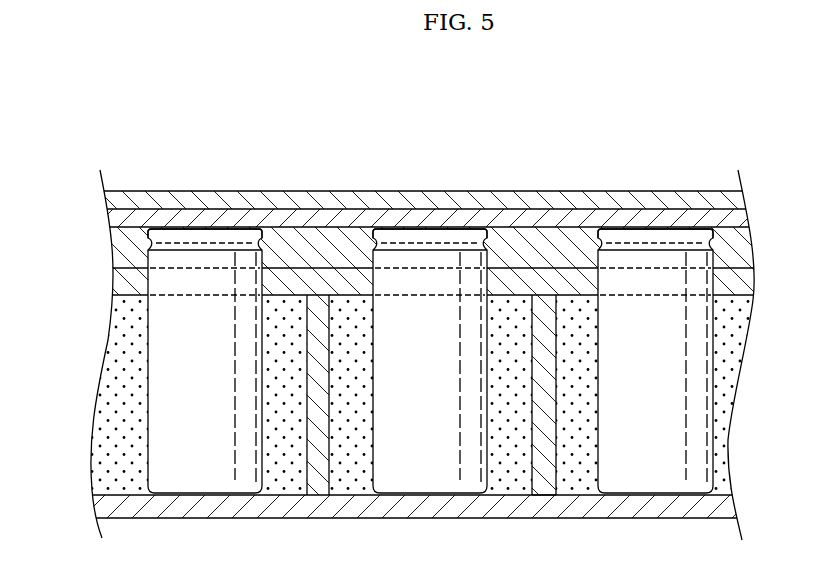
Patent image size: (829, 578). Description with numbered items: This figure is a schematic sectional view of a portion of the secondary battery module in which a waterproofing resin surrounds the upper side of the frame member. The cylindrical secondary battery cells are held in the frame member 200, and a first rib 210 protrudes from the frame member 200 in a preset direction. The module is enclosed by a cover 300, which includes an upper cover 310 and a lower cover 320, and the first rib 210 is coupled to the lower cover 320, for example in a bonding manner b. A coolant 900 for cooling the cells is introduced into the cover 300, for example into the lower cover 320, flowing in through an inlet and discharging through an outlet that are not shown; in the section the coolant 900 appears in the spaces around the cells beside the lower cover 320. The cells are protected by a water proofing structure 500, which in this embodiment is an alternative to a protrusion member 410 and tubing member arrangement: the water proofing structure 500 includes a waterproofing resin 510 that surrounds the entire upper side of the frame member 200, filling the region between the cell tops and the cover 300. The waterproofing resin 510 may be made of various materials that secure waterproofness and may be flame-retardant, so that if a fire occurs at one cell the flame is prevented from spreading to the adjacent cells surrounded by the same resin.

The frame member 200 is at (430, 320).
The first rib 210 is at (543, 335).
The cover 300 is at (430, 156).
The upper cover 310 is at (588, 217).
The lower cover 320 is at (353, 518).
The protrusion member 410 is at (383, 285).
The water proofing structure 500 is at (430, 289).
The waterproofing resin 510 is at (298, 238).
The coolant 900 is at (278, 484).
The bonding manner b is at (542, 497).